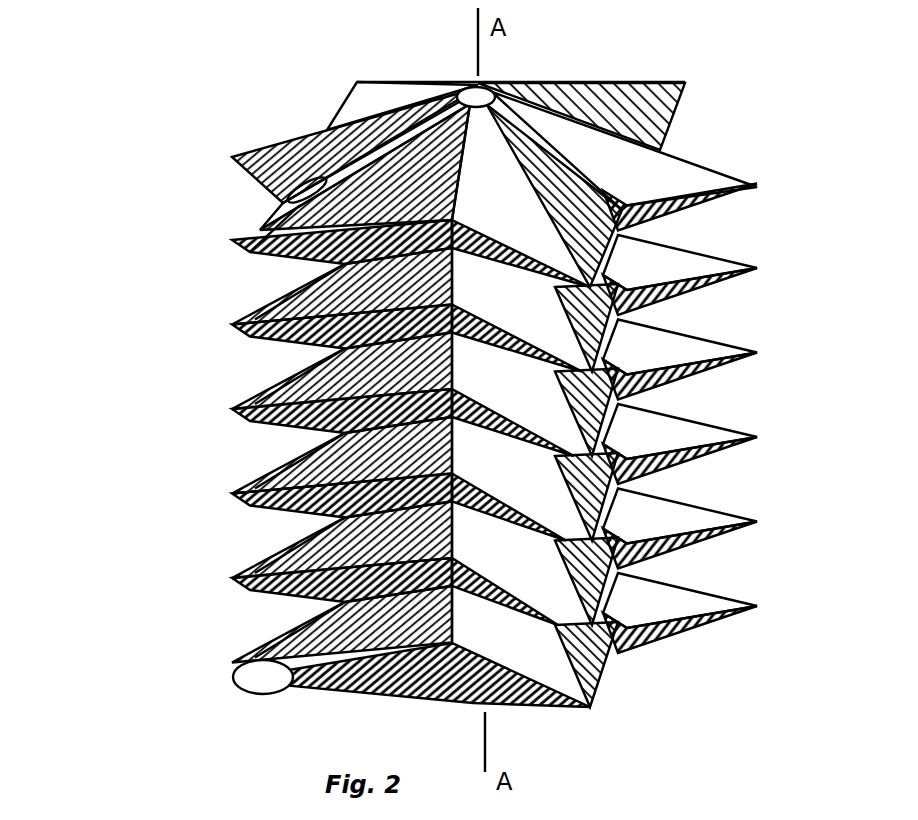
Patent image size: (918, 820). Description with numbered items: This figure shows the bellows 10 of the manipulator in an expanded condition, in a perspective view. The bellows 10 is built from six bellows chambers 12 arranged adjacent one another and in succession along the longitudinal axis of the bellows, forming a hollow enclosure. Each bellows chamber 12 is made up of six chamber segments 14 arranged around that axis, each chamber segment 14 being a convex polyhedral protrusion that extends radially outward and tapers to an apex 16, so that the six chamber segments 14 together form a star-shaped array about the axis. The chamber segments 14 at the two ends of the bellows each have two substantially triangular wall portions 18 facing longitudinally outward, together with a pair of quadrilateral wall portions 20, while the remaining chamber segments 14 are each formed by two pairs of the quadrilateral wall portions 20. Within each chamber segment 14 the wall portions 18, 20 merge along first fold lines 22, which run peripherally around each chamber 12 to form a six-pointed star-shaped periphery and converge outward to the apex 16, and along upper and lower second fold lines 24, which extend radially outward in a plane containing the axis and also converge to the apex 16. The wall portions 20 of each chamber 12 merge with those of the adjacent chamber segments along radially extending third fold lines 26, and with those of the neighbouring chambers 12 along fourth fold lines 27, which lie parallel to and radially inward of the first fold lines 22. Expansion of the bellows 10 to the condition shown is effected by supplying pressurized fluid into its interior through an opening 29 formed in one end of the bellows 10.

The bellows 10 is at (226, 378).
The bellows chamber 12 is at (226, 154).
The chamber segment 14 is at (252, 678).
The apex 16 is at (690, 82).
The triangular wall portion 18 is at (418, 125).
The quadrilateral wall portion 20 is at (298, 462).
The first fold line 22 is at (283, 300).
The second fold line 24 is at (315, 135).
The third fold line 26 is at (280, 208).
The fourth fold line 27 is at (462, 255).
The opening 29 is at (490, 86).